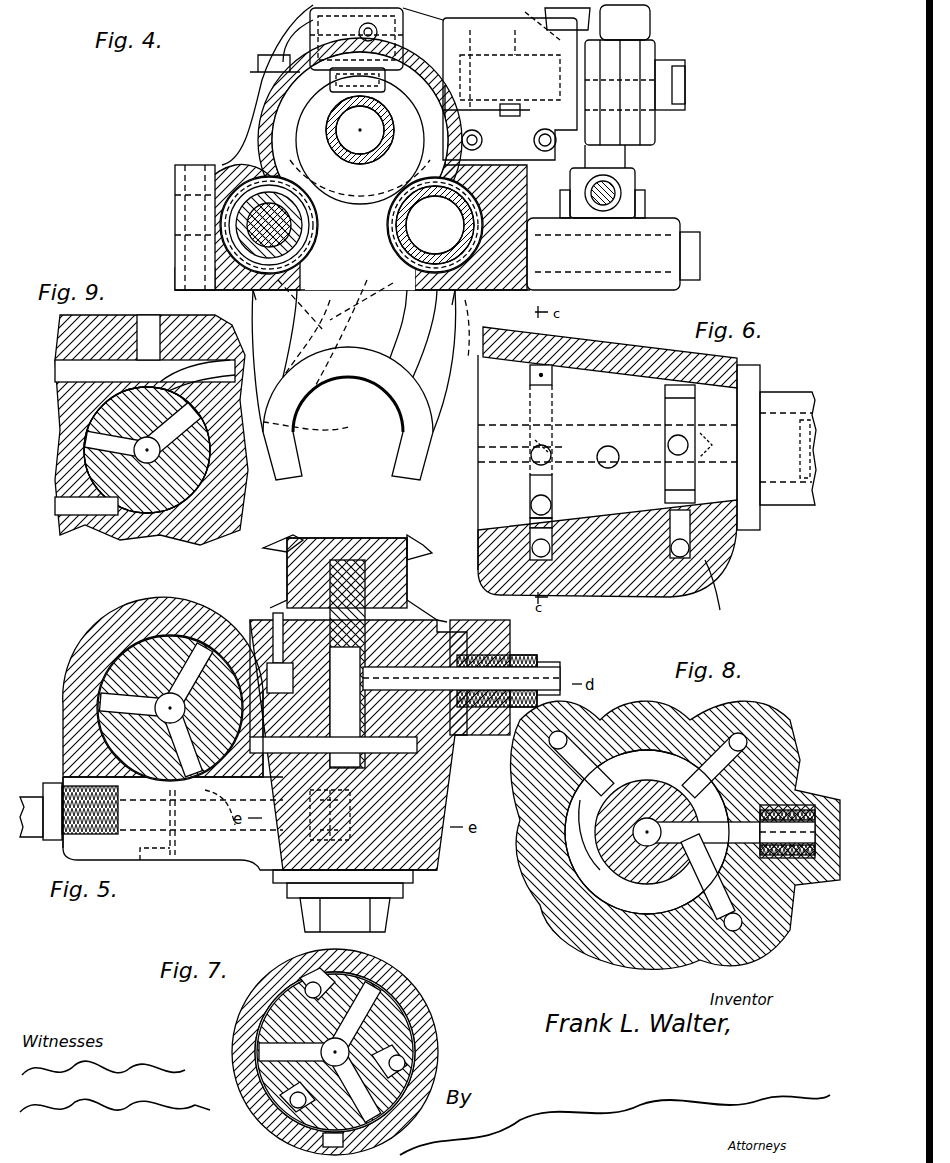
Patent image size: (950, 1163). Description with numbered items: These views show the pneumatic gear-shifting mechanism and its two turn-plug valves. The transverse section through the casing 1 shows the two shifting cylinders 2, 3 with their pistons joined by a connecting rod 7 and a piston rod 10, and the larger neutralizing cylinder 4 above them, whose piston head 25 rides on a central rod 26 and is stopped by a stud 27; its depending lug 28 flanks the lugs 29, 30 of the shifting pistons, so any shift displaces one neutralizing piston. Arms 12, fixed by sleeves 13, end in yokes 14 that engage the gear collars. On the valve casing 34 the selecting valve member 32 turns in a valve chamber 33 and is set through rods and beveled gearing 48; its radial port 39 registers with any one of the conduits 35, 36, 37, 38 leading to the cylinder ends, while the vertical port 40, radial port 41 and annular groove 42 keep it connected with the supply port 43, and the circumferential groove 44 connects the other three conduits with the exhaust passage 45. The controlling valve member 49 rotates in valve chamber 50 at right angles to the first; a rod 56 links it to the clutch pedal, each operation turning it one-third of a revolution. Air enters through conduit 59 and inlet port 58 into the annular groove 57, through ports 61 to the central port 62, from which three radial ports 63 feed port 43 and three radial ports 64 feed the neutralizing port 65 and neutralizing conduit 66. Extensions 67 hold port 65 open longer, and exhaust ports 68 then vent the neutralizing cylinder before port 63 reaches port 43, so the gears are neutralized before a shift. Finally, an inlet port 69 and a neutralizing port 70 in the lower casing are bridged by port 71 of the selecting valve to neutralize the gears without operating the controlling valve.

In FIG. 4, the casing 1 is at (262, 115).
In FIG. 4, the shifting cylinder 2 is at (228, 192).
In FIG. 4, the shifting cylinder 3 is at (468, 330).
In FIG. 4, the neutralizing cylinder 4 is at (448, 30).
In FIG. 4, the connecting rod 7 is at (240, 230).
In FIG. 4, the piston rod 10 is at (428, 200).
In FIG. 4, the arm 12 is at (422, 372).
In FIG. 4, the sleeve 13 is at (262, 294).
In FIG. 4, the yoke 14 is at (395, 448).
In FIG. 4, the piston head 25 is at (300, 107).
In FIG. 4, the central rod 26 is at (385, 75).
In FIG. 4, the stud 27 is at (345, 62).
In FIG. 4, the depending lug 28 is at (268, 190).
In FIG. 4, the lug 29 is at (356, 318).
In FIG. 4, the lug 30 is at (322, 300).
In FIG. 9, the selecting valve member 32 is at (120, 498).
In FIG. 5, the selecting valve member 32 is at (390, 660).
In FIG. 8, the selecting valve member 32 is at (625, 805).
In FIG. 9, the valve chamber 33 is at (165, 510).
In FIG. 5, the valve chamber 33 is at (405, 785).
In FIG. 8, the valve chamber 33 is at (575, 890).
In FIG. 4, the valve casing 34 is at (572, 20).
In FIG. 9, the valve casing 34 is at (220, 520).
In FIG. 6, the valve casing 34 is at (720, 530).
In FIG. 5, the valve casing 34 is at (440, 772).
In FIG. 8, the valve casing 34 is at (615, 940).
In FIG. 7, the valve casing 34 is at (425, 1015).
In FIG. 4, the conduit 35 is at (378, 30).
In FIG. 5, the conduit 35 is at (462, 625).
In FIG. 8, the conduit 35 is at (782, 808).
In FIG. 4, the conduit 36 is at (270, 44).
In FIG. 8, the conduit 36 is at (725, 935).
In FIG. 4, the conduit 37 is at (510, 89).
In FIG. 8, the conduit 37 is at (575, 730).
In FIG. 8, the conduit 38 is at (748, 730).
In FIG. 5, the radial port 39 is at (443, 640).
In FIG. 8, the radial port 39 is at (690, 860).
In FIG. 9, the vertical port 40 is at (134, 450).
In FIG. 5, the vertical port 40 is at (400, 612).
In FIG. 8, the vertical port 40 is at (634, 825).
In FIG. 7, the vertical port 40 is at (335, 1052).
In FIG. 5, the radial port 41 is at (355, 760).
In FIG. 5, the annular groove 42 is at (420, 745).
In FIG. 5, the supply port 43 is at (280, 678).
In FIG. 5, the circumferential groove 44 is at (262, 660).
In FIG. 8, the circumferential groove 44 is at (650, 755).
In FIG. 5, the exhaust passage 45 is at (278, 618).
In FIG. 8, the exhaust passage 45 is at (575, 858).
In FIG. 4, the rods and beveled gearing 48 is at (540, 25).
In FIG. 5, the rods and beveled gearing 48 is at (300, 548).
In FIG. 4, the controlling valve member 49 is at (635, 72).
In FIG. 6, the controlling valve member 49 is at (595, 370).
In FIG. 5, the controlling valve member 49 is at (130, 655).
In FIG. 7, the controlling valve member 49 is at (410, 1045).
In FIG. 6, the valve chamber 50 is at (640, 372).
In FIG. 5, the valve chamber 50 is at (64, 782).
In FIG. 7, the valve chamber 50 is at (395, 1000).
In FIG. 4, the rod 56 is at (615, 185).
In FIG. 6, the annular groove 57 is at (665, 498).
In FIG. 6, the inlet port 58 is at (705, 560).
In FIG. 5, the inlet port 58 is at (178, 815).
In FIG. 4, the conduit 59 is at (560, 140).
In FIG. 5, the conduit 59 is at (34, 817).
In FIG. 6, the port 61 is at (685, 440).
In FIG. 6, the central port 62 is at (598, 432).
In FIG. 5, the central port 62 is at (202, 640).
In FIG. 7, the central port 62 is at (375, 995).
In FIG. 6, the radial port 63 is at (606, 467).
In FIG. 5, the radial port 63 is at (100, 705).
In FIG. 6, the radial port 64 is at (530, 500).
In FIG. 7, the radial port 64 is at (265, 1048).
In FIG. 6, the neutralizing port 65 is at (530, 522).
In FIG. 7, the neutralizing port 65 is at (323, 1145).
In FIG. 9, the neutralizing conduit 66 is at (60, 372).
In FIG. 6, the neutralizing conduit 66 is at (545, 555).
In FIG. 6, the extension 67 is at (530, 375).
In FIG. 7, the extension 67 is at (360, 985).
In FIG. 6, the exhaust port 68 is at (547, 450).
In FIG. 7, the exhaust port 68 is at (305, 988).
In FIG. 9, the inlet port 69 is at (58, 510).
In FIG. 6, the inlet port 69 is at (719, 595).
In FIG. 5, the inlet port 69 is at (162, 858).
In FIG. 9, the neutralizing port 70 is at (215, 352).
In FIG. 9, the port 71 is at (90, 425).
In FIG. 5, the port 71 is at (415, 843).